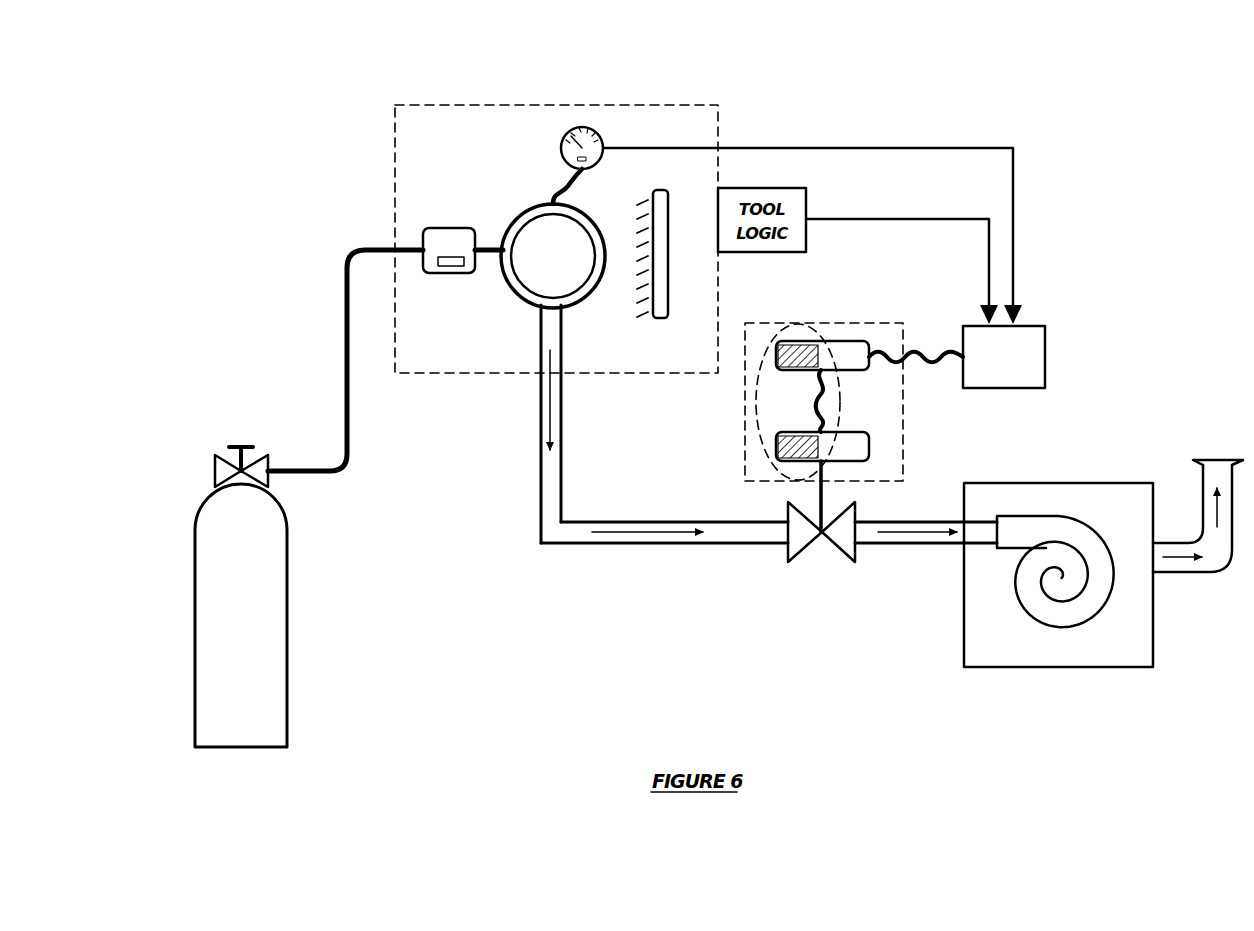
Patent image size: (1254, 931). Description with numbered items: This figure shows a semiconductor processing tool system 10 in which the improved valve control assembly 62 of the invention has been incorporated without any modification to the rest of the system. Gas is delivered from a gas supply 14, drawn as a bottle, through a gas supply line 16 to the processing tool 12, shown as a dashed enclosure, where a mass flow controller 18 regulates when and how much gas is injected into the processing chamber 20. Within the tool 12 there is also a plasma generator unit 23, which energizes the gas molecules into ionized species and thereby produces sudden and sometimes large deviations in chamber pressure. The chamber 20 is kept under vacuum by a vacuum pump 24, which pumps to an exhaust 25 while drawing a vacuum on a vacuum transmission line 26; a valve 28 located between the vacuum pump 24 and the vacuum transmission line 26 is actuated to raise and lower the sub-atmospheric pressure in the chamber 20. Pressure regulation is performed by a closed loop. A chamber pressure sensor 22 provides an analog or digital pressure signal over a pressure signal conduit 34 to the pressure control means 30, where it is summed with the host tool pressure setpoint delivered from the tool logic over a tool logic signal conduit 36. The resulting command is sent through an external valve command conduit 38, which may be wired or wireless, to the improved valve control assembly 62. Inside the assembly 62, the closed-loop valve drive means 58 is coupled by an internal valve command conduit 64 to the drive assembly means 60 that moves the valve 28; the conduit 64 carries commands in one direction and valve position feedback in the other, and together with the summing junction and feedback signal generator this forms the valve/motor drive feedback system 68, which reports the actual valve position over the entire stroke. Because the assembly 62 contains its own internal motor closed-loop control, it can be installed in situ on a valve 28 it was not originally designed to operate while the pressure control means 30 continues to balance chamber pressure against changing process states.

The semiconductor processing tool system 10 is at (348, 148).
The processing tool 12 is at (718, 105).
The gas supply 14 is at (288, 617).
The gas supply line 16 is at (345, 302).
The mass flow controller 18 is at (447, 227).
The processing chamber 20 is at (527, 205).
The chamber pressure sensor 22 is at (583, 127).
The plasma generator unit 23 is at (668, 295).
The vacuum pump 24 is at (1050, 667).
The exhaust 25 is at (1163, 573).
The vacuum transmission line 26 is at (542, 505).
The valve 28 is at (813, 542).
The pressure control means 30 is at (1047, 357).
The pressure signal conduit 34 is at (943, 218).
The tool logic signal conduit 36 is at (843, 220).
The external valve command conduit 38 is at (920, 362).
The closed-loop valve drive means 58 is at (843, 341).
The drive assembly means 60 is at (775, 443).
The valve control assembly 62 is at (905, 412).
The internal valve command conduit 64 is at (815, 400).
The valve/motor drive feedback system 68 is at (765, 462).